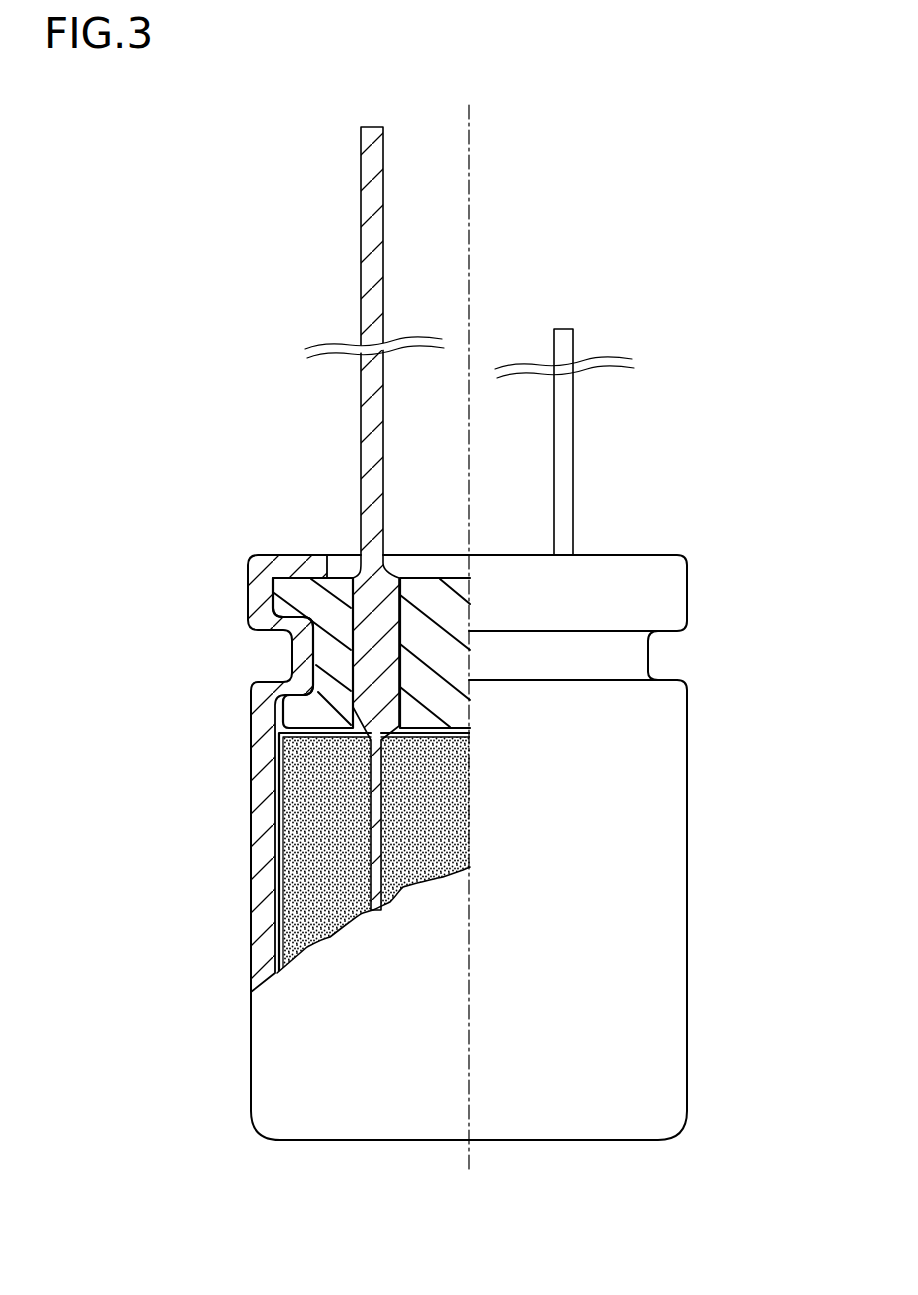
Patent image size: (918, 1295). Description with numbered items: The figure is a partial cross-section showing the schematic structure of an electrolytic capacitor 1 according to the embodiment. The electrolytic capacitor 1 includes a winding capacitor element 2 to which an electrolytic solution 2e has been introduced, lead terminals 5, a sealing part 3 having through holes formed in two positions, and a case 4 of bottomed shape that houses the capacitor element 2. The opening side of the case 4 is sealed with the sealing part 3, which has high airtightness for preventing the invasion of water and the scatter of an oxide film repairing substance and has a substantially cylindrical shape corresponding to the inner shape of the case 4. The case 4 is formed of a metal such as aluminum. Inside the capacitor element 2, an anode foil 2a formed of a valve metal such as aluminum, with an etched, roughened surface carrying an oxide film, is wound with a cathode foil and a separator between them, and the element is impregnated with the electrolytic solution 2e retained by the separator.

The electrolytic capacitor 1 is at (650, 168).
The winding capacitor element 2 is at (325, 856).
The anode foil 2a is at (294, 892).
The electrolytic solution 2e is at (280, 870).
The sealing part 3 is at (303, 605).
The case 4 is at (668, 1012).
The lead terminals 5 is at (360, 310).